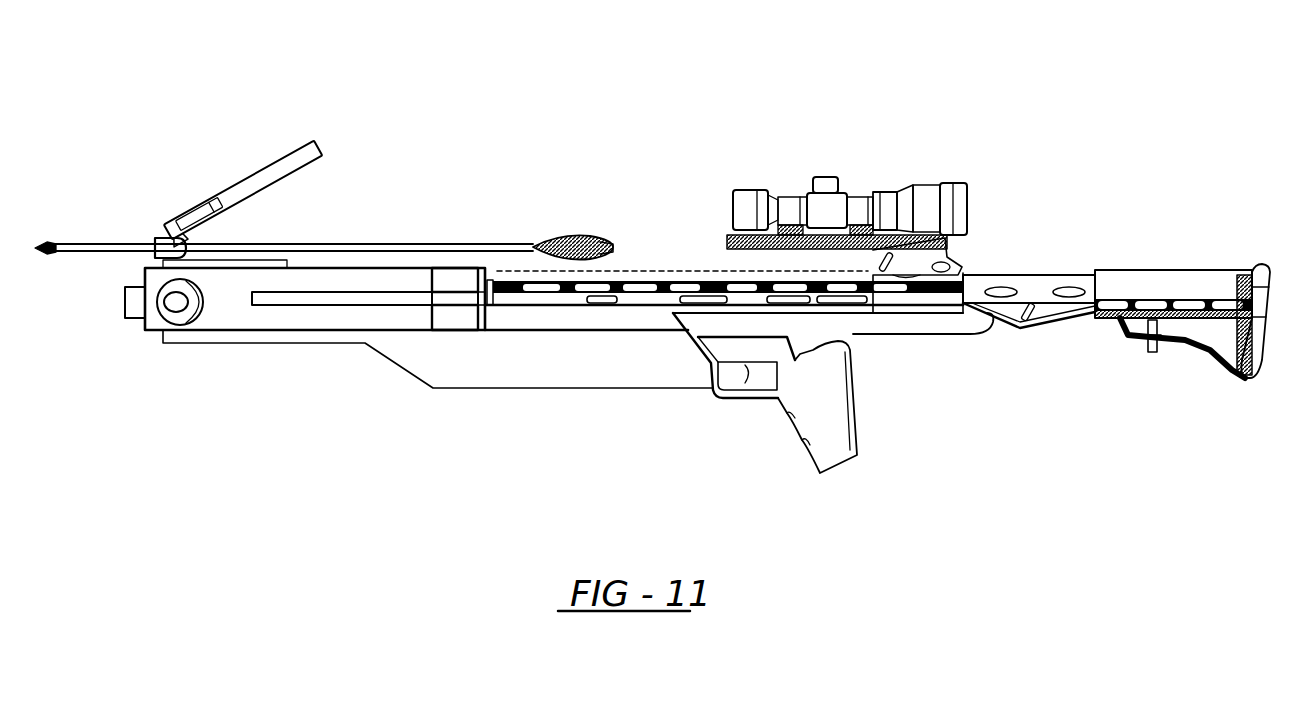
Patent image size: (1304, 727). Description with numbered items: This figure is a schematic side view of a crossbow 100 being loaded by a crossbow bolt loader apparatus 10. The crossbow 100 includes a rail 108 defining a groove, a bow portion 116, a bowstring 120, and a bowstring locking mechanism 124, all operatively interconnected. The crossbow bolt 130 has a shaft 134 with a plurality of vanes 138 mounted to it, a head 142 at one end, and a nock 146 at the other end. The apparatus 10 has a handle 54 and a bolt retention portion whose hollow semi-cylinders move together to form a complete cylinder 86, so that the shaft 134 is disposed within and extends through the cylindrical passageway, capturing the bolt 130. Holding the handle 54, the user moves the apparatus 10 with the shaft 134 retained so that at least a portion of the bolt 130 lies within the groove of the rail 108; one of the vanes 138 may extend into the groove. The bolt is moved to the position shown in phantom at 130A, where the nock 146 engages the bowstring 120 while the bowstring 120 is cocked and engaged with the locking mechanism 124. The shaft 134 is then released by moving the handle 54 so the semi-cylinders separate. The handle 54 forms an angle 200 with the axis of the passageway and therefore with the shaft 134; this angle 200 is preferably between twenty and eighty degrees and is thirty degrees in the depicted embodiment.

The apparatus 10 is at (287, 148).
The handle 54 is at (318, 160).
The complete cylinder 86 is at (151, 222).
The crossbow 100 is at (1068, 130).
The rail 108 is at (612, 298).
The bow portion 116 is at (337, 372).
The bowstring 120 is at (873, 245).
The bowstring locking mechanism 124 is at (990, 350).
The crossbow bolt 130 is at (457, 242).
The bolt position shown in phantom 130A is at (702, 272).
The shaft 134 is at (110, 245).
The vanes 138 is at (583, 236).
The head 142 is at (43, 254).
The nock 146 is at (604, 248).
The angle 200 is at (305, 236).